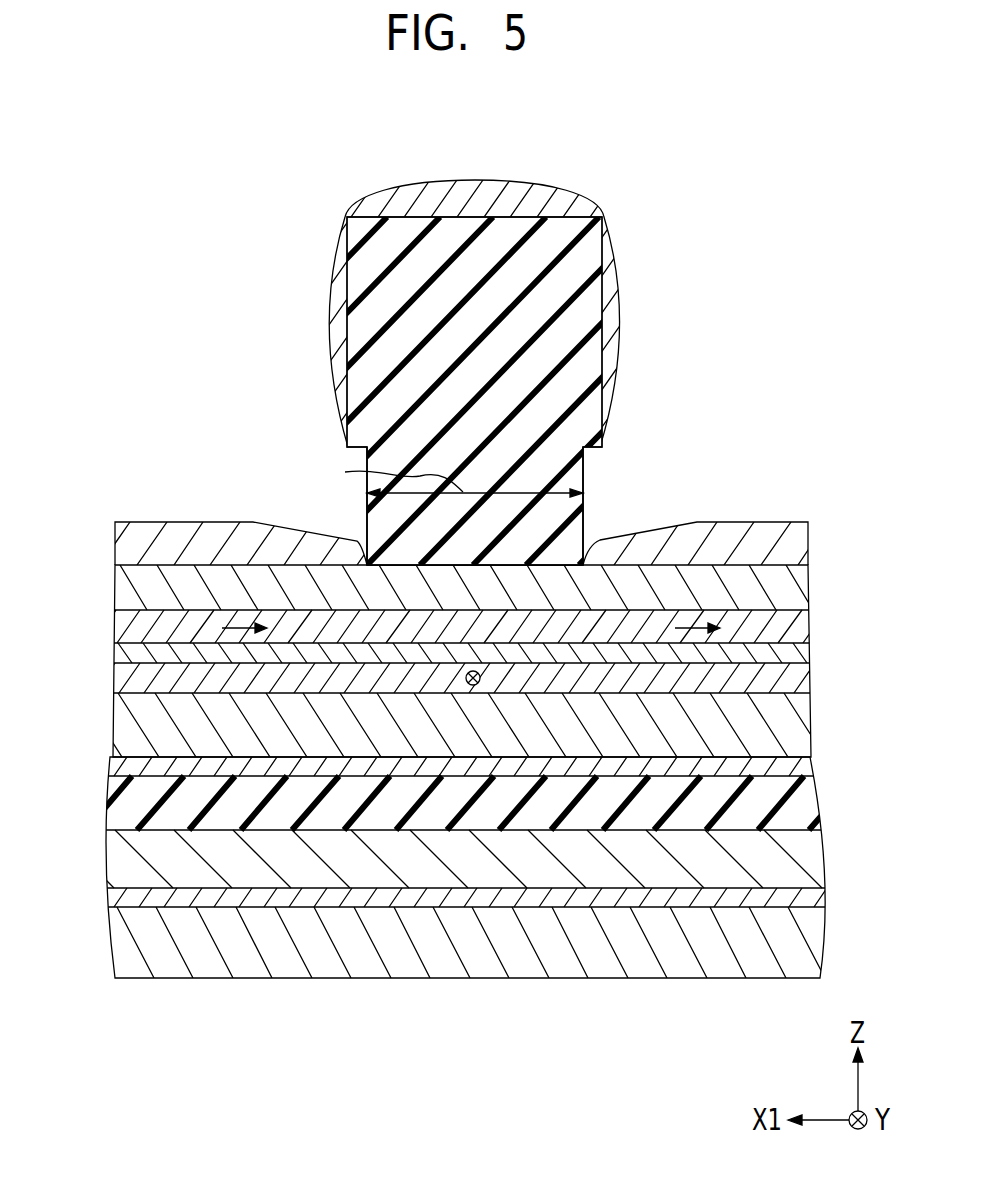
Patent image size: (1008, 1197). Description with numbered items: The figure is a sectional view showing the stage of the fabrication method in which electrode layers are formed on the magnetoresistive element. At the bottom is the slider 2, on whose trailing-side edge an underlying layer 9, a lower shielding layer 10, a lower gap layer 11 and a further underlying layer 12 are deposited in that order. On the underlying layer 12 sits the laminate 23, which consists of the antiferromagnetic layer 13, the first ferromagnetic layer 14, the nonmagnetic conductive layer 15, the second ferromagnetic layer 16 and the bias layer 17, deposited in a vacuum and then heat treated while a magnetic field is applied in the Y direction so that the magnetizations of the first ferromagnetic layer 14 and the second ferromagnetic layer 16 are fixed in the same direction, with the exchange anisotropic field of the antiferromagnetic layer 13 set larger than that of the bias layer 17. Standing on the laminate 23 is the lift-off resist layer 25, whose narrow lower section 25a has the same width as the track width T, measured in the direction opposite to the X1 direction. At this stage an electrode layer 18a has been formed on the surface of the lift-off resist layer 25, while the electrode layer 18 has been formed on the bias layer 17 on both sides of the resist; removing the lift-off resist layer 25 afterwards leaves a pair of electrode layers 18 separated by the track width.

The slider 2 is at (805, 950).
The underlying layer 9 is at (815, 898).
The lower shielding layer 10 is at (805, 851).
The lower gap layer 11 is at (792, 804).
The underlying layer 12 is at (780, 767).
The antiferromagnetic layer 13 is at (787, 720).
The first ferromagnetic layer 14 is at (790, 678).
The nonmagnetic conductive layer 15 is at (790, 653).
The second ferromagnetic layer 16 is at (795, 623).
The bias layer 17 is at (788, 578).
The electrode layer 18 is at (127, 541).
The electrode layer 18a is at (468, 197).
The laminate 23 is at (103, 567).
The lift-off resist layer 25 is at (567, 315).
The lower section 25a is at (553, 473).